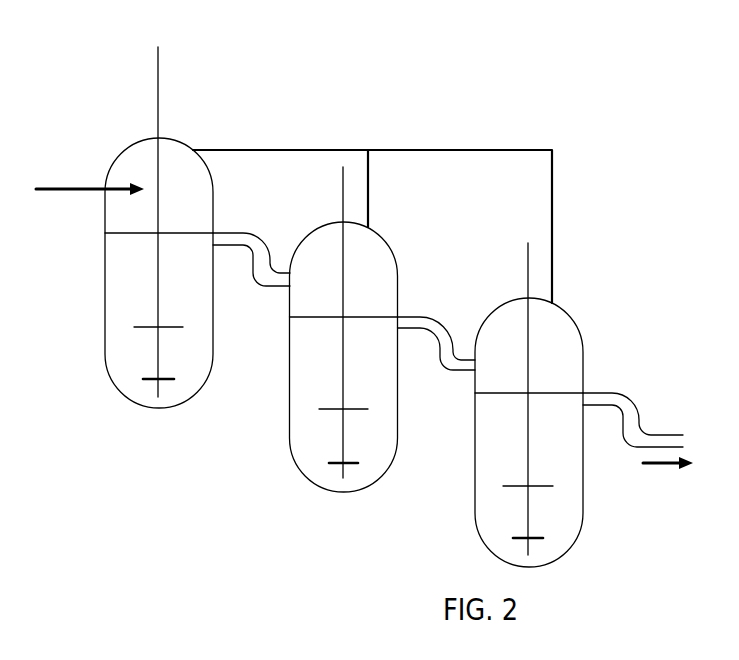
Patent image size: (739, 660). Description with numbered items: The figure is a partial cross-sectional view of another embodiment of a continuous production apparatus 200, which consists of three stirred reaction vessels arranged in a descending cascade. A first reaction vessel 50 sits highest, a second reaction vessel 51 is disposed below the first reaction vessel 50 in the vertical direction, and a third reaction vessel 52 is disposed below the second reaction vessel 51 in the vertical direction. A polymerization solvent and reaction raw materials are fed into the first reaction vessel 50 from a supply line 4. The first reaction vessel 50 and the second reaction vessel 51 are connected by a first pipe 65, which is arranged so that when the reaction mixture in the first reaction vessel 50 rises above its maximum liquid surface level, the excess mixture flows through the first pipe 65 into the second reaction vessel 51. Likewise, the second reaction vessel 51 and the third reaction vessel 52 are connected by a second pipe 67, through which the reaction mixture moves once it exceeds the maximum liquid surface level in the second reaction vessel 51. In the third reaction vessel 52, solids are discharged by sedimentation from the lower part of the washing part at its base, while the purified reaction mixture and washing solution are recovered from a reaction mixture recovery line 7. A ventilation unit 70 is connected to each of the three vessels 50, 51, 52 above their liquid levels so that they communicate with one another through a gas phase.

The continuous production apparatus 200 is at (607, 66).
The first reaction vessel 50 is at (119, 160).
The second reaction vessel 51 is at (306, 244).
The third reaction vessel 52 is at (493, 318).
The first pipe 65 is at (266, 277).
The second pipe 67 is at (449, 361).
The ventilation unit 70 is at (264, 150).
The supply line 4 is at (67, 193).
The reaction mixture recovery line 7 is at (661, 468).